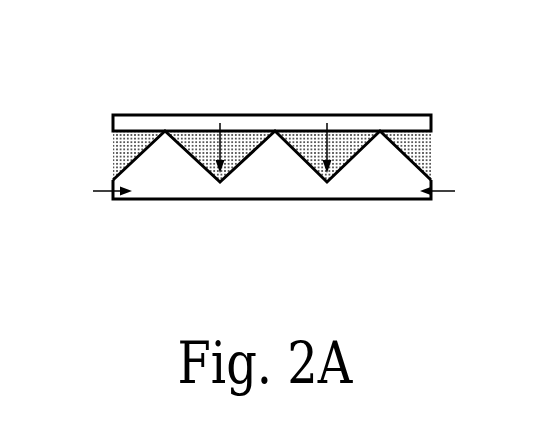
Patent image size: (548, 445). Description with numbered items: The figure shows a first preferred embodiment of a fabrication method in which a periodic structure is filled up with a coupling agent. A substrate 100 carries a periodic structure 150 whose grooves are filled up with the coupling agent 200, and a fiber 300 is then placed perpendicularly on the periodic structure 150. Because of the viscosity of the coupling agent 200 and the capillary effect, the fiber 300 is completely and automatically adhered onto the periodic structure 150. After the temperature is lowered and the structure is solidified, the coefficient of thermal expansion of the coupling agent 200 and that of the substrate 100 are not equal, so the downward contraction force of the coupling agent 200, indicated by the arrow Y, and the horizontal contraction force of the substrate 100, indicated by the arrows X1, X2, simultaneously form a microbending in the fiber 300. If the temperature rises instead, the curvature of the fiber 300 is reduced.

The substrate 100 is at (285, 194).
The periodic structure 150 is at (362, 150).
The coupling agent 200 is at (244, 143).
The fiber 300 is at (356, 120).
The arrow Y is at (203, 151).
The arrow X1 is at (456, 190).
The arrow X2 is at (88, 190).